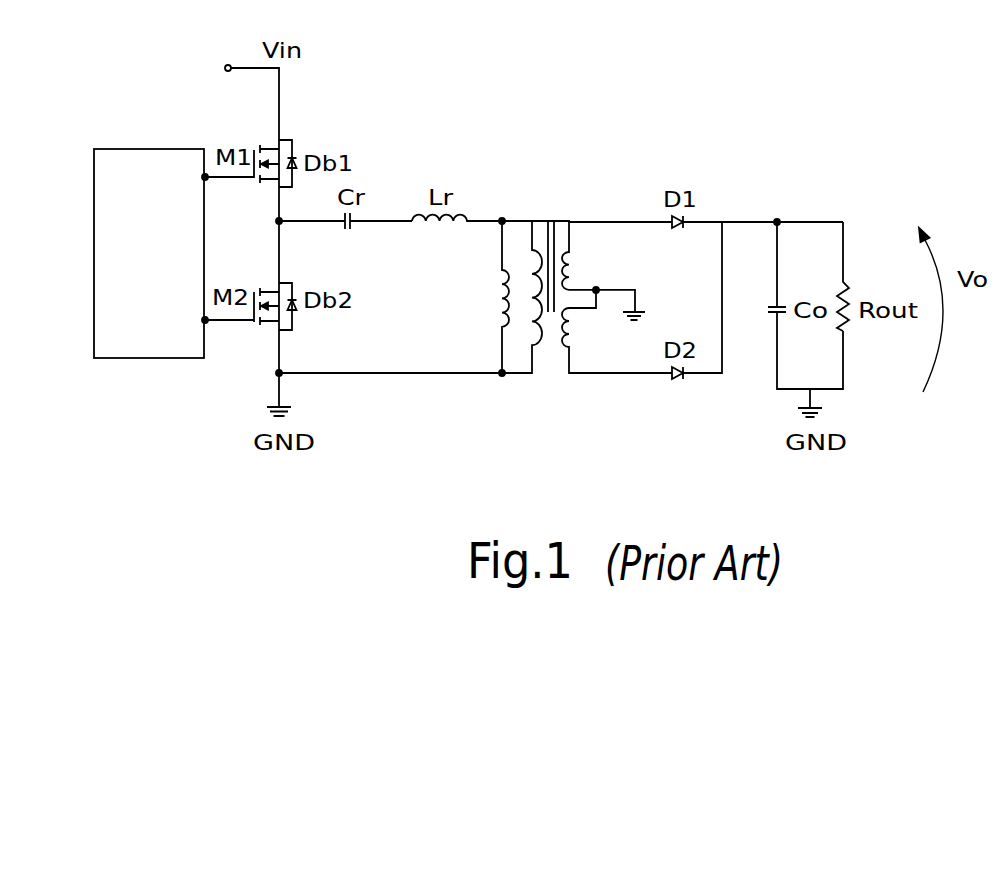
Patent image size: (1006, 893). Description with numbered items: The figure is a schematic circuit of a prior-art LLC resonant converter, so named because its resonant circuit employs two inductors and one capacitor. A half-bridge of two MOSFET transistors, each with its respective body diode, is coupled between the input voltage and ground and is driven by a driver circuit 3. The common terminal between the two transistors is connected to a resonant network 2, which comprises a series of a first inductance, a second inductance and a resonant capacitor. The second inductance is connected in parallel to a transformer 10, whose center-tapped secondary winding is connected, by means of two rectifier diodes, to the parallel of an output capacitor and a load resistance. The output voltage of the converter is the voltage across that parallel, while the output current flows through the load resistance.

The driver circuit 3 is at (148, 170).
The resonant network 2 is at (510, 197).
The transformer 10 is at (567, 202).